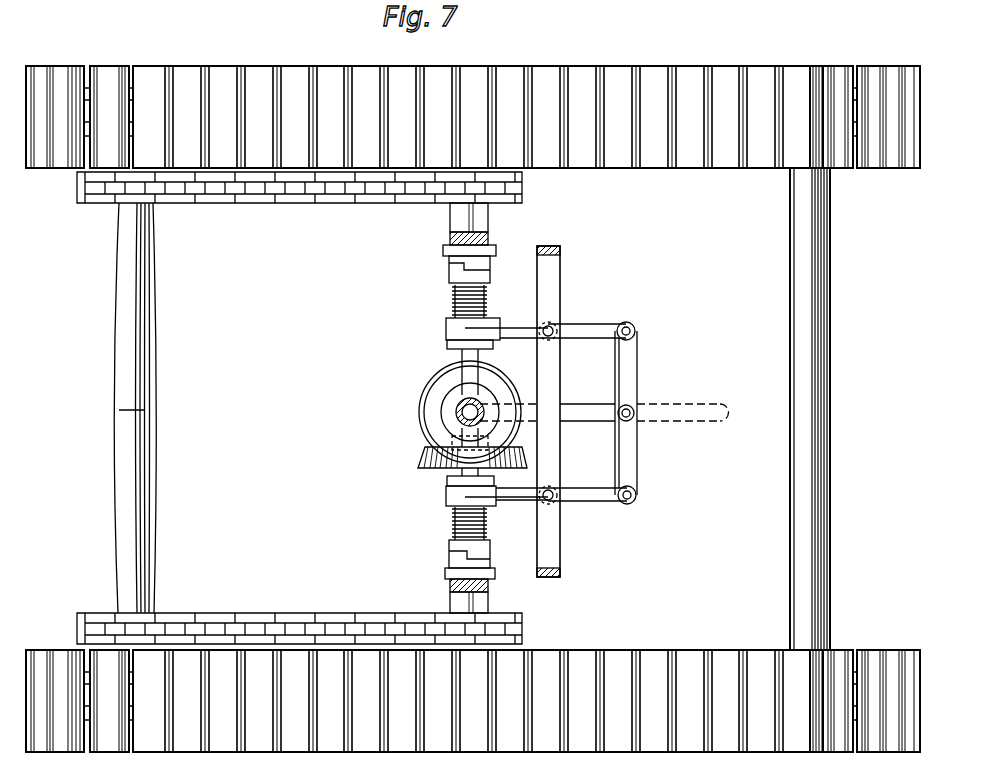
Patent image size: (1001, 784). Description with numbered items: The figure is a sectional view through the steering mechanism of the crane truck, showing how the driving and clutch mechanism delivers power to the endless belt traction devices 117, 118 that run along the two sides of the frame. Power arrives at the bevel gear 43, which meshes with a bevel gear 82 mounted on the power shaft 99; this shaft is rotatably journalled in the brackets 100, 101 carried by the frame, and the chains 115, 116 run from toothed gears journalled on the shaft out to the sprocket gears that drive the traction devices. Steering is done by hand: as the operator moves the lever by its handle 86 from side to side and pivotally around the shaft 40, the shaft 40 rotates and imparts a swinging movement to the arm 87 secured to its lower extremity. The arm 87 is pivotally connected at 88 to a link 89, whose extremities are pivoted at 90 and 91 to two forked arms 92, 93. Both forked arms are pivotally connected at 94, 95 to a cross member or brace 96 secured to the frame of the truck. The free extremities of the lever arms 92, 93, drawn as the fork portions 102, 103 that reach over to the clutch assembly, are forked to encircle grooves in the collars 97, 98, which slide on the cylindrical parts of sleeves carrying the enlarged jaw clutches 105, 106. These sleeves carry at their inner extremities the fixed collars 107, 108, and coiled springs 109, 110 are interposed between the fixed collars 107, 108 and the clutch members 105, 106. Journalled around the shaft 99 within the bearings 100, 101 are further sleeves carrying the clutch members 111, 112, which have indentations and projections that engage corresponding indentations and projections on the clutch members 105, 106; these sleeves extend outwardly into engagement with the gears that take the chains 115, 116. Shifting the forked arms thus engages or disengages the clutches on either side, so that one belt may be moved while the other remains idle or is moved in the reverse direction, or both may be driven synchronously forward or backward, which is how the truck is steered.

The shaft 40 is at (460, 422).
The bevel gear 43 is at (458, 413).
The bevel gear 82 is at (420, 462).
The handle 86 is at (721, 351).
The arm 87 is at (592, 410).
The pivotal connection 88 is at (635, 409).
The link 89 is at (632, 465).
The pivotal connection 90 is at (630, 321).
The pivotal connection 91 is at (623, 503).
The forked arm 92 is at (588, 316).
The forked arm 93 is at (604, 497).
The pivotal connection 94 is at (553, 325).
The pivotal connection 95 is at (550, 500).
The cross member 96 is at (545, 535).
The collar 97 is at (447, 344).
The collar 98 is at (446, 498).
The power shaft 99 is at (440, 372).
The bracket 100 is at (455, 241).
The bracket 101 is at (452, 586).
The upper arm 102 is at (497, 311).
The lower arm 103 is at (494, 500).
The jaw clutch 105 is at (450, 279).
The jaw clutch 106 is at (450, 548).
The fixed collar 107 is at (462, 352).
The fixed collar 108 is at (447, 480).
The coiled spring 109 is at (452, 306).
The coiled spring 110 is at (452, 520).
The clutch member 111 is at (449, 261).
The clutch member 112 is at (452, 560).
The chain 115 is at (290, 205).
The chain 116 is at (218, 611).
The endless belt traction device 117 is at (921, 684).
The endless belt traction device 118 is at (921, 122).